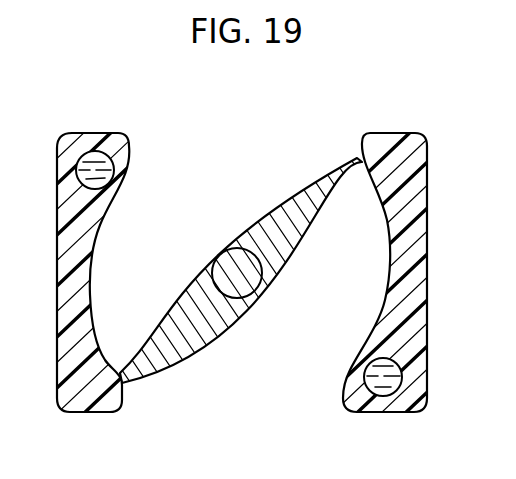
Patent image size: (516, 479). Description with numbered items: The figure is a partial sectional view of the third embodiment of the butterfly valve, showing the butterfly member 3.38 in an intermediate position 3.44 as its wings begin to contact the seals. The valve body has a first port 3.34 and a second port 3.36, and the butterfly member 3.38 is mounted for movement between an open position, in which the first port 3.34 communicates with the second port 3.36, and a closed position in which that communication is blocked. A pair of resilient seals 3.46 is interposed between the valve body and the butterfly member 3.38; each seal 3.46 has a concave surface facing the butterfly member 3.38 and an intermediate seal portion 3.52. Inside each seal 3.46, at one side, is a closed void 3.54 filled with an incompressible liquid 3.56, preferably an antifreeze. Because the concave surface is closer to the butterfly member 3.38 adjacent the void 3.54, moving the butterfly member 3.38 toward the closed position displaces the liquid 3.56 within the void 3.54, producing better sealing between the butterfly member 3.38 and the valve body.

The first port 3.34 is at (256, 280).
The second port 3.36 is at (304, 407).
The butterfly member 3.38 is at (267, 223).
The intermediate position 3.44 is at (330, 132).
The resilient seal 3.46 is at (262, 280).
The intermediate seal portion 3.52 is at (107, 208).
The closed void 3.54 is at (117, 178).
The liquid 3.56 is at (113, 163).